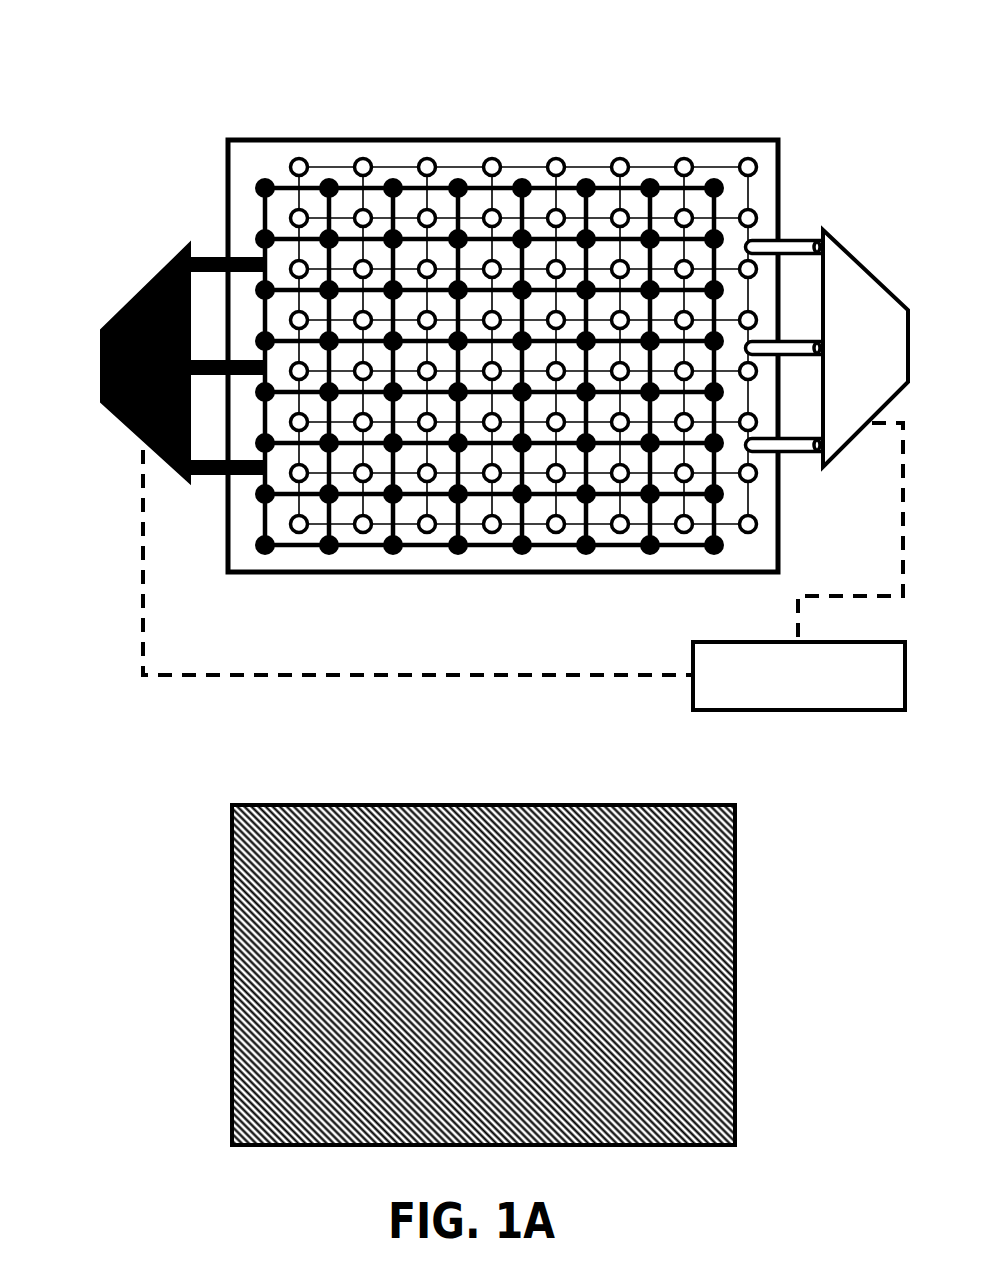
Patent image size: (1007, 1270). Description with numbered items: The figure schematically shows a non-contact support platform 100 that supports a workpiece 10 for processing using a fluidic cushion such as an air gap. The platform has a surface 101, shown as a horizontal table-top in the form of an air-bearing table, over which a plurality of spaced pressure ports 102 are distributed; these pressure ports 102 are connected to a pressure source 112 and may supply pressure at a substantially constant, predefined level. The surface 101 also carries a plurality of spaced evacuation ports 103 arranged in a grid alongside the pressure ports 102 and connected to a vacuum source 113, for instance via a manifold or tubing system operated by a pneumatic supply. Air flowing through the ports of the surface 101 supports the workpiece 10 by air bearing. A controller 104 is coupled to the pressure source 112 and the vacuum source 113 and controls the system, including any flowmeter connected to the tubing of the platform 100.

The non-contact support platform 100 is at (98, 757).
The surface 101 is at (672, 140).
The pressure ports 102 is at (492, 167).
The evacuation ports 103 is at (390, 170).
The controller 104 is at (843, 710).
The pressure source 112 is at (876, 278).
The vacuum source 113 is at (136, 298).
The workpiece 10 is at (735, 975).